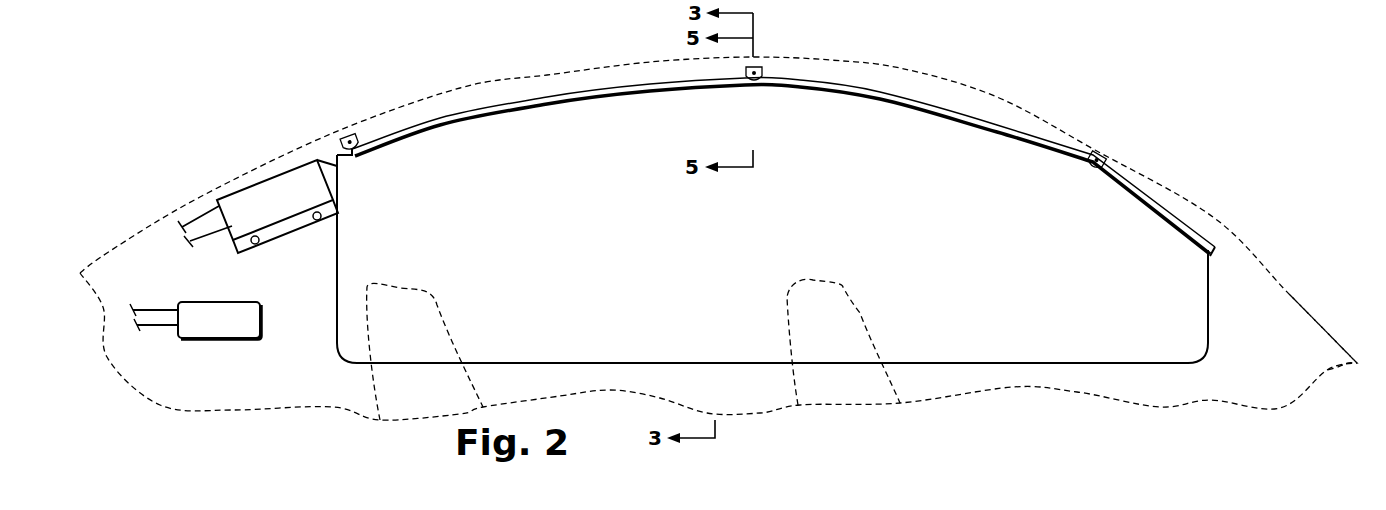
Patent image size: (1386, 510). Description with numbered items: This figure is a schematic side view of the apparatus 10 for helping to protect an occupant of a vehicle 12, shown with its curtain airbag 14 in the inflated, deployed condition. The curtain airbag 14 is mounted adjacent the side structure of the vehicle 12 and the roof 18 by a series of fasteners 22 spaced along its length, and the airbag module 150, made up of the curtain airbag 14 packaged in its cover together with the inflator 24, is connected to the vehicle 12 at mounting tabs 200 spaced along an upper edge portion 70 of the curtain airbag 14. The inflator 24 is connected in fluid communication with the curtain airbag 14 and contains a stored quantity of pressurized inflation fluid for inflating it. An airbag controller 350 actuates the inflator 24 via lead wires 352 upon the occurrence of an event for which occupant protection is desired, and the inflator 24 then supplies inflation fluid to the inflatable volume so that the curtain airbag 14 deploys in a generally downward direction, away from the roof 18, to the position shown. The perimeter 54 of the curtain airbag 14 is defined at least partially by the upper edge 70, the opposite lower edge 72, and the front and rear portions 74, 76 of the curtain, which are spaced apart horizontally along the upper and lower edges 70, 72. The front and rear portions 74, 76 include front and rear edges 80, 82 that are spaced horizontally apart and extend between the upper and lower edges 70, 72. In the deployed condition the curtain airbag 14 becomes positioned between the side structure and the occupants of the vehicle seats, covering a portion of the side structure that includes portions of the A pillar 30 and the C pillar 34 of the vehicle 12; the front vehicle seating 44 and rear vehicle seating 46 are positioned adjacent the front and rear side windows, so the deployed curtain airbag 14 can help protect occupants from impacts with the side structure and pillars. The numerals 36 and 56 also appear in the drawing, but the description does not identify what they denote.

The apparatus 10 is at (946, 61).
The vehicle 12 is at (1101, 75).
The curtain airbag 14 is at (977, 307).
The roof 18 is at (997, 97).
The fasteners 22 is at (758, 68).
The inflator 24 is at (263, 197).
The A pillar 30 is at (1277, 315).
The C pillar 34 is at (322, 310).
The roof panel outer layer 36 is at (547, 96).
The front vehicle seating 44 is at (857, 310).
The rear vehicle seating 46 is at (437, 307).
The perimeter 54 is at (1113, 365).
The lower edge 56 is at (757, 363).
The upper edge 70 is at (862, 88).
The lower edge 72 is at (613, 365).
The front portion 74 is at (1187, 313).
The rear portion 76 is at (367, 280).
The front edge 80 is at (1210, 312).
The rear edge 82 is at (337, 272).
The airbag module 150 is at (464, 64).
The mounting tabs 200 is at (745, 77).
The airbag controller 350 is at (220, 340).
The lead wires 352 is at (205, 213).